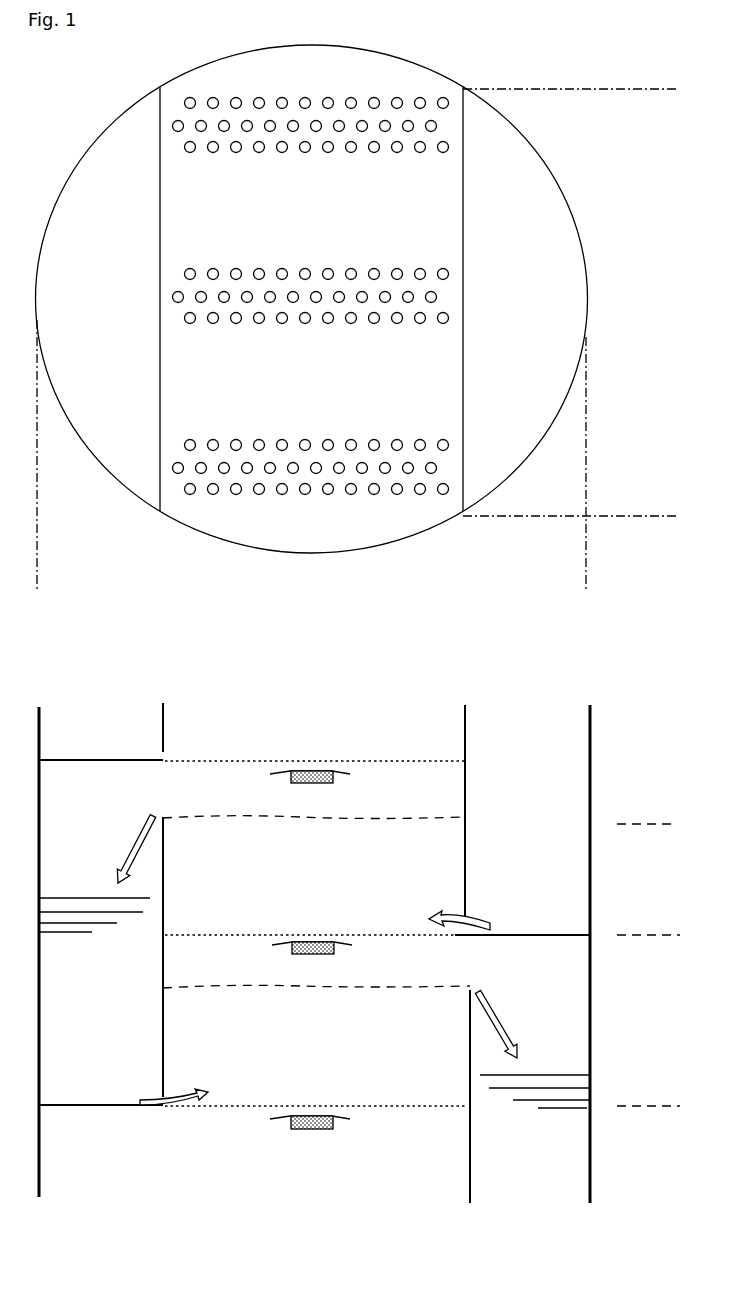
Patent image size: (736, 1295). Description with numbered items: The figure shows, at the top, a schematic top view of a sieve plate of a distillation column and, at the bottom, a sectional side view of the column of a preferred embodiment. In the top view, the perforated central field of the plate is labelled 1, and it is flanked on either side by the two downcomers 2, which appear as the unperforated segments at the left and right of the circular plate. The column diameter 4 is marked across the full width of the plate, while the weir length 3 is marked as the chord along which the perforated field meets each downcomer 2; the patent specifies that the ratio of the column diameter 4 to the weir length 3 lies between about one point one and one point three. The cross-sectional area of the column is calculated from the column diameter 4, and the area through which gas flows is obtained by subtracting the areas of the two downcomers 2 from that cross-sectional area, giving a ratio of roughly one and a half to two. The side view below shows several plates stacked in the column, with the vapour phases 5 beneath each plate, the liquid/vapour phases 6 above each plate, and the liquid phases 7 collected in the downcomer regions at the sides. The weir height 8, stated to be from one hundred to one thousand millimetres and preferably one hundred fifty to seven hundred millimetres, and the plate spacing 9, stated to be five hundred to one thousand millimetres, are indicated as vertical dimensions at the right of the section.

The perforated central zone of sieve tray 1 is at (163, 207).
The downcomer 2 is at (311, 299).
The weir length 3 is at (678, 90).
The column diameter 4 is at (39, 592).
The vapour phase 5 is at (311, 964).
The liquid/vapour phase 6 is at (316, 933).
The liquid phase 7 is at (314, 974).
The weir height 8 is at (647, 825).
The plate spacing 9 is at (647, 936).